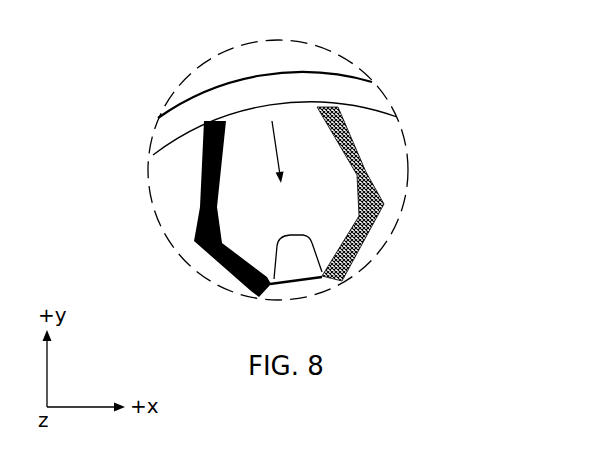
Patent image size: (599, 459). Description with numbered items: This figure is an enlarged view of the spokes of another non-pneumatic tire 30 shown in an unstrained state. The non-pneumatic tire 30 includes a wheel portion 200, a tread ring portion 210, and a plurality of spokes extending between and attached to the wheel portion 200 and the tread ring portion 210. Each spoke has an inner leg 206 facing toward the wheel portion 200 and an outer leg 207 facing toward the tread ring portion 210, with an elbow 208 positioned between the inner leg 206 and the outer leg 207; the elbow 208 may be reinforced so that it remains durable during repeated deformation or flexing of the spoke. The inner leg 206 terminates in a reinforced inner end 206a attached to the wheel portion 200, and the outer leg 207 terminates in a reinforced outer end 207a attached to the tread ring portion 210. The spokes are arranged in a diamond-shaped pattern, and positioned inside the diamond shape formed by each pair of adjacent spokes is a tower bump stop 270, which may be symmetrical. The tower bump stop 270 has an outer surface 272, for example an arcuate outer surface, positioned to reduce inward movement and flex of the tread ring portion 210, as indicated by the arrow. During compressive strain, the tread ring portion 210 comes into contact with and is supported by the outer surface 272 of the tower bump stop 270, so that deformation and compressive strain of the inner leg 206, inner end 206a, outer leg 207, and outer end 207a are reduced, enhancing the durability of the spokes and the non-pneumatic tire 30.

The non-pneumatic tire 30 is at (340, 48).
The wheel portion 200 is at (296, 292).
The inner leg 206 is at (226, 258).
The reinforced inner end 206a is at (258, 290).
The outer leg 207 is at (204, 168).
The reinforced outer end 207a is at (328, 107).
The elbow 208 is at (194, 235).
The tread ring portion 210 is at (383, 100).
The tower bump stop 270 is at (307, 256).
The outer surface 272 is at (293, 236).